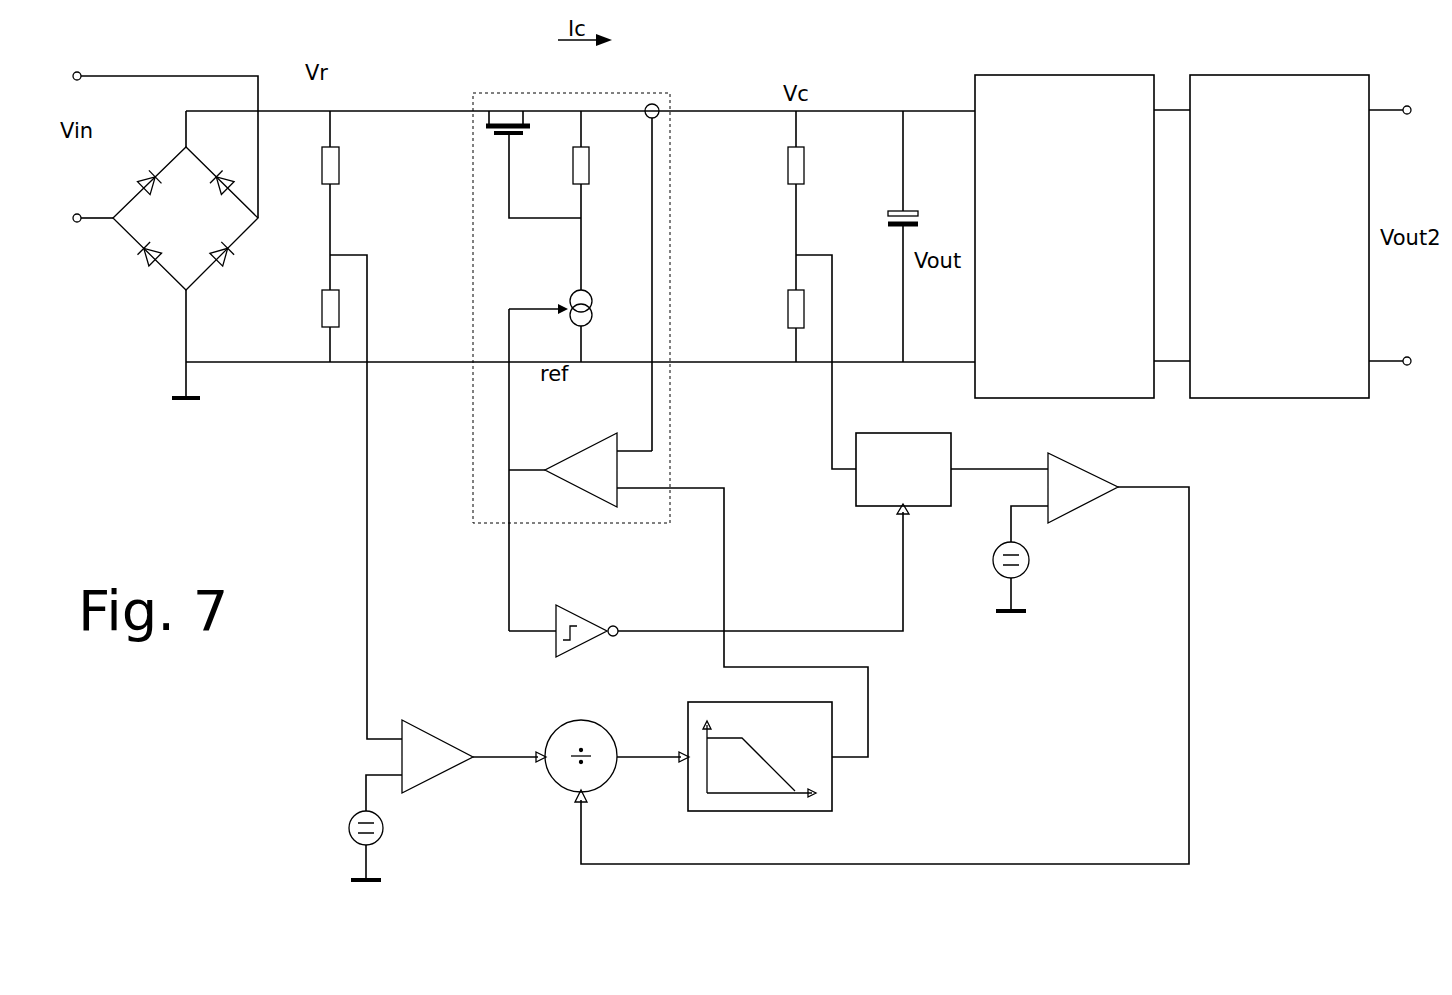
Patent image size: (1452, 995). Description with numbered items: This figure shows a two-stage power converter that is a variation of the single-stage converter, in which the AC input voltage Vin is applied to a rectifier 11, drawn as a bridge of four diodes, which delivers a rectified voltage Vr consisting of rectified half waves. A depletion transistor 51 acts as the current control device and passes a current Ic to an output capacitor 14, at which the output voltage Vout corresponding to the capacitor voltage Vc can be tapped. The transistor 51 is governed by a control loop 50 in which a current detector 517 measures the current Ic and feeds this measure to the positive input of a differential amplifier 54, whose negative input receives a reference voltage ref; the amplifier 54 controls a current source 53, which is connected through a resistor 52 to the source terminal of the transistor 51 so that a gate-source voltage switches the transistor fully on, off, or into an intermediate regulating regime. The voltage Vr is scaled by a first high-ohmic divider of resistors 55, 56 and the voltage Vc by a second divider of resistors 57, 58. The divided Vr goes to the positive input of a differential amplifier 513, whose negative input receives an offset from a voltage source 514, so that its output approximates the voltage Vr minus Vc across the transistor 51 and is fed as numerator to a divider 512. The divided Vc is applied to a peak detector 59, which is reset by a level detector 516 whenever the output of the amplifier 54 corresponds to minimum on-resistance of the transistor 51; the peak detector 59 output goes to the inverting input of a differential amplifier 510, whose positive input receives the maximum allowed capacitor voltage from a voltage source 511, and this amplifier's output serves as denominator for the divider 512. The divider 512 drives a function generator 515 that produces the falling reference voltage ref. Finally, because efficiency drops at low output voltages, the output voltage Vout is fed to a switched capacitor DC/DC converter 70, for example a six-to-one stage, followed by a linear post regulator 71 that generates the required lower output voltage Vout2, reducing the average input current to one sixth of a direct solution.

The rectifier 11 is at (118, 275).
The output capacitor 14 is at (910, 205).
The control loop 50 is at (670, 148).
The depletion transistor 51 is at (509, 117).
The resistor 52 is at (582, 167).
The current source 53 is at (591, 299).
The differential amplifier 54 is at (586, 450).
The resistor 55 is at (342, 173).
The resistor 56 is at (323, 309).
The resistor 57 is at (805, 172).
The resistor 58 is at (785, 310).
The peak detector 59 is at (872, 432).
The switched capacitor DC/DC converter 70 is at (1005, 75).
The linear post regulator 71 is at (1294, 73).
The differential amplifier 510 is at (1088, 467).
The voltage source 511 is at (1026, 562).
The divider 512 is at (608, 727).
The differential amplifier 513 is at (429, 731).
The voltage source 514 is at (383, 826).
The function generator 515 is at (834, 799).
The level detector 516 is at (584, 618).
The current detector 517 is at (652, 103).